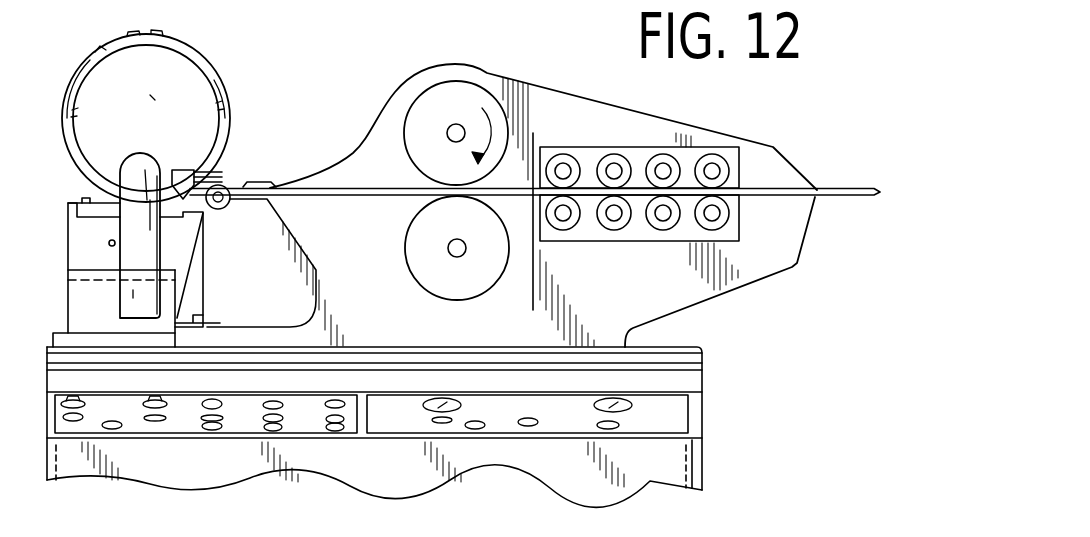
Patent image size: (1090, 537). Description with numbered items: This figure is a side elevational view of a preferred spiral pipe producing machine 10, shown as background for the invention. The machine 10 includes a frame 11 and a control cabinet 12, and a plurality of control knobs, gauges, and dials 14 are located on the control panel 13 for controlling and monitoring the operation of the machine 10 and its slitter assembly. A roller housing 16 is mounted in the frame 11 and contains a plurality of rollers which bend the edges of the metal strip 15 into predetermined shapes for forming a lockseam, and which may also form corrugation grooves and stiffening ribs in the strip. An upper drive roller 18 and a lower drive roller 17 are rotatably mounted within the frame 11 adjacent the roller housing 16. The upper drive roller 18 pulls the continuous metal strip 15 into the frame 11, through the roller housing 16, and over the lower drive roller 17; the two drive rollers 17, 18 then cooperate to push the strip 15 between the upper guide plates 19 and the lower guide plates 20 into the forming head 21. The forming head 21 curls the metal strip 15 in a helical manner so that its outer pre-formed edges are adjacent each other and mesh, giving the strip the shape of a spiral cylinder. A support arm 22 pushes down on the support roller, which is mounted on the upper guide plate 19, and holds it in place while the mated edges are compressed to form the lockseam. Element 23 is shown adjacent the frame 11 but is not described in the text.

The spiral pipe producing machine 10 is at (612, 110).
The frame 11 is at (743, 290).
The control cabinet 12 is at (702, 474).
The control panel 13 is at (678, 420).
The control knobs, gauges, and dials 14 is at (200, 414).
The metal strip 15 is at (850, 187).
The roller housing 16 is at (605, 242).
The lower drive roller 17 is at (425, 252).
The upper drive roller 18 is at (473, 104).
The upper guide plates 19 is at (262, 182).
The lower guide plates 20 is at (250, 199).
The forming head 21 is at (212, 96).
The support arm 22 is at (140, 153).
The support block 23 is at (183, 243).